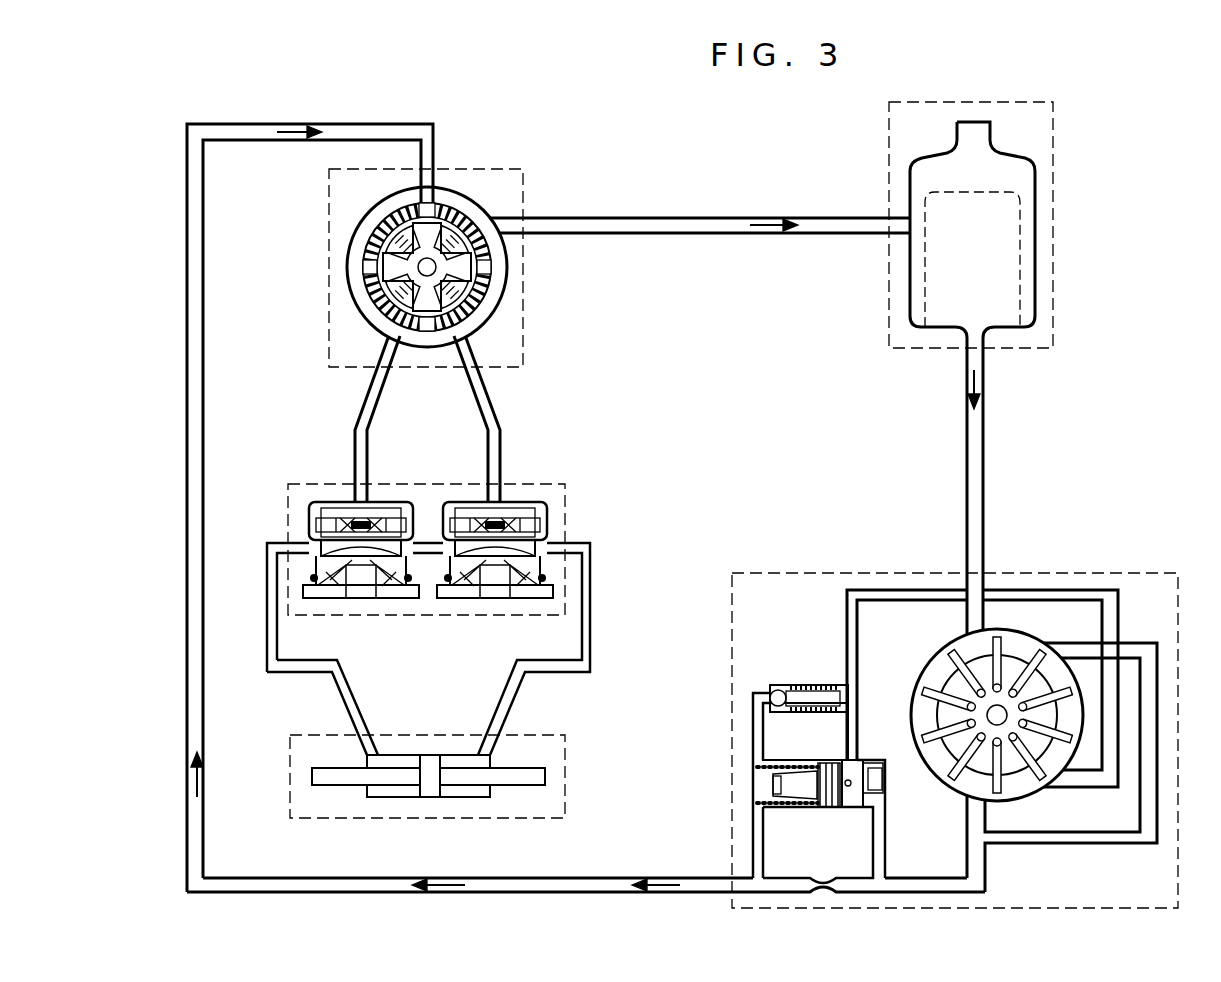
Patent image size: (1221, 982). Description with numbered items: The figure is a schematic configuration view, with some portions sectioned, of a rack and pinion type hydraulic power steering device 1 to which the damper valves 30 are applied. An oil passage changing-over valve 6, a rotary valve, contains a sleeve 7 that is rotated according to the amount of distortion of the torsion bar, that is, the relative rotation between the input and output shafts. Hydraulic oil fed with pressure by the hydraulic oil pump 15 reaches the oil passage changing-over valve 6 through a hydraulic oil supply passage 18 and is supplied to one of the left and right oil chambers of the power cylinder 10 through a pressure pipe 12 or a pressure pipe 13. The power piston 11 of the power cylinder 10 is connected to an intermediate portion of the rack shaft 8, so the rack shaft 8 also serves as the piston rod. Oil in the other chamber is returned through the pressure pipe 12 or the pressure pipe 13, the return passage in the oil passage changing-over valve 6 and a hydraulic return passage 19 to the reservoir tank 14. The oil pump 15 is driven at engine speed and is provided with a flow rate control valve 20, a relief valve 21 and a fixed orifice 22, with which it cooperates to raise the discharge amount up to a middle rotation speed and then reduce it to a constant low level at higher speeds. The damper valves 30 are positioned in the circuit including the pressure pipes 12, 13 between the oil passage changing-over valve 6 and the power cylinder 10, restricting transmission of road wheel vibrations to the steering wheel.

The hydraulic power steering device 1 is at (681, 183).
The oil passage changing-over valve 6 is at (442, 231).
The sleeve 7 is at (483, 280).
The rack shaft 8 is at (330, 787).
The power cylinder 10 is at (449, 707).
The power piston 11 is at (428, 790).
The pressure pipe 12 is at (358, 418).
The pressure pipe 13 is at (487, 398).
The reservoir tank 14 is at (1053, 254).
The hydraulic oil pump 15 is at (955, 694).
The hydraulic oil supply passage 18 is at (205, 335).
The hydraulic return passage 19 is at (712, 237).
The flow rate control valve 20 is at (798, 808).
The relief valve 21 is at (806, 684).
The fixed orifice 22 is at (826, 878).
The damper valve 30 is at (378, 599).